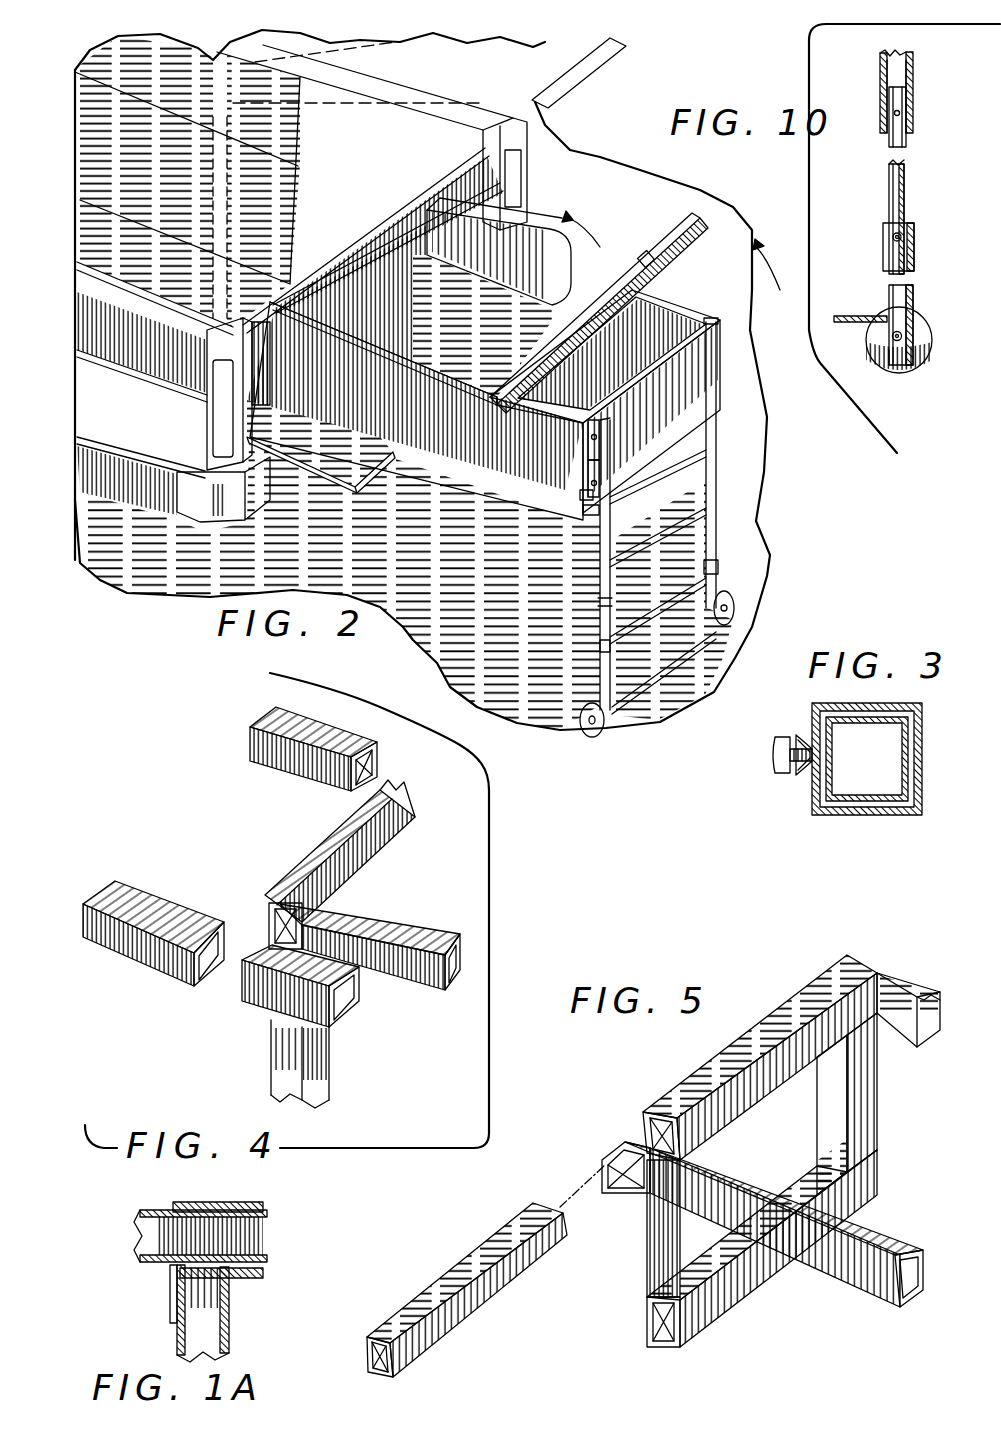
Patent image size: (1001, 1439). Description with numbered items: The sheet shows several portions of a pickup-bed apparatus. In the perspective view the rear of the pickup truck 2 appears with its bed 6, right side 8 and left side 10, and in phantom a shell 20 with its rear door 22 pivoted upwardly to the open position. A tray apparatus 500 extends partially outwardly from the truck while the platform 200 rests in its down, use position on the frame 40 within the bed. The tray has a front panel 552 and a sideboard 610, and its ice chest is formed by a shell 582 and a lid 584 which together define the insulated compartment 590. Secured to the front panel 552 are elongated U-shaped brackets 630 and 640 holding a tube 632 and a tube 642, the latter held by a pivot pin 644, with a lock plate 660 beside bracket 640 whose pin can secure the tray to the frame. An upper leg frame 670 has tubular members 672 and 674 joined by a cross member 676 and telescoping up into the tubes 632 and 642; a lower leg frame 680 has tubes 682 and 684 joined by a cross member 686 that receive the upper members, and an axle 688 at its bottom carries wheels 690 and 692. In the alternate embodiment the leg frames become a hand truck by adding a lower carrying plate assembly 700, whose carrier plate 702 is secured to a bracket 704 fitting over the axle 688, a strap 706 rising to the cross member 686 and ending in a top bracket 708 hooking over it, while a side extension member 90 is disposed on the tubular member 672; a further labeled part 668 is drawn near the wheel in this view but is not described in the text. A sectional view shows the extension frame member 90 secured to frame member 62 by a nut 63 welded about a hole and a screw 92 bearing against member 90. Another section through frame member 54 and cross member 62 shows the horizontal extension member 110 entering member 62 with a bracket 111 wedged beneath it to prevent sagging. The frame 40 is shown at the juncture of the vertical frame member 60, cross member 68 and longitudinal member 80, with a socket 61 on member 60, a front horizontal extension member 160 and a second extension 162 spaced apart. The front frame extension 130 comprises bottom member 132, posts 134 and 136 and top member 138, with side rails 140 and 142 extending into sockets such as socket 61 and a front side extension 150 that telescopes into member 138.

In FIG. 2, the pickup truck 2 is at (128, 505).
In FIG. 2, the platform 200 is at (403, 142).
In FIG. 2, the rear door 22 is at (567, 92).
In FIG. 2, the shell 20 is at (230, 149).
In FIG. 2, the right side 8 is at (530, 153).
In FIG. 2, the lid 584 is at (656, 252).
In FIG. 2, the shell 582 is at (605, 388).
In FIG. 2, the bracket 630 is at (690, 387).
In FIG. 2, the sideboard 610 is at (473, 462).
In FIG. 2, the insulated compartment 590 is at (567, 393).
In FIG. 2, the tray apparatus 500 is at (407, 465).
In FIG. 2, the left side 10 is at (176, 445).
In FIG. 2, the bed 6 is at (265, 455).
In FIG. 2, the pivot pin 644 is at (583, 437).
In FIG. 2, the tube 642 is at (600, 527).
In FIG. 2, the lock plate 660 is at (587, 493).
In FIG. 2, the bracket 640 is at (587, 490).
In FIG. 2, the upper leg frame 670 is at (673, 527).
In FIG. 2, the tubular member 674 is at (597, 553).
In FIG. 2, the tubular member 672 is at (727, 445).
In FIG. 10, the tubular member 672 is at (890, 133).
In FIG. 2, the tube 632 is at (720, 410).
In FIG. 2, the front panel 552 is at (600, 500).
In FIG. 2, the cross member 676 is at (620, 545).
In FIG. 2, the cross member 686 is at (627, 588).
In FIG. 10, the cross member 686 is at (870, 235).
In FIG. 2, the axle 688 is at (650, 647).
In FIG. 2, the tube 684 is at (596, 603).
In FIG. 2, the lower leg frame 680 is at (590, 646).
In FIG. 2, the tube 682 is at (713, 570).
In FIG. 10, the tube 682 is at (887, 257).
In FIG. 2, the wheel 692 is at (584, 705).
In FIG. 2, the wheel 690 is at (728, 603).
In FIG. 10, the wheel 690 is at (914, 322).
In FIG. 10, the extension frame member 90 is at (887, 102).
In FIG. 3, the extension frame member 90 is at (900, 763).
In FIG. 10, the top bracket 708 is at (890, 226).
In FIG. 10, the back plate or strap 706 is at (913, 254).
In FIG. 10, the lower carrying plate assembly 700 is at (891, 285).
In FIG. 10, the carrier plate 702 is at (858, 303).
In FIG. 10, the bracket 704 is at (883, 340).
In FIG. 10, the hub 668 is at (897, 367).
In FIG. 3, the frame member 62 is at (877, 707).
In FIG. 1A, the frame member 62 is at (263, 1210).
In FIG. 3, the screw 92 is at (773, 747).
In FIG. 3, the nut 63 is at (797, 780).
In FIG. 4, the second horizontal extension 162 is at (312, 765).
In FIG. 4, the front horizontal extension member 160 is at (180, 910).
In FIG. 4, the frame 40 is at (318, 840).
In FIG. 4, the cross member 68 is at (396, 855).
In FIG. 4, the frame member 80 is at (441, 937).
In FIG. 4, the tubing portion 61 is at (265, 994).
In FIG. 4, the vertical frame member 60 is at (329, 1072).
In FIG. 5, the side rail 140 is at (917, 993).
In FIG. 5, the top horizontal frame member 138 is at (757, 1037).
In FIG. 5, the front frame extension 130 is at (773, 1142).
In FIG. 5, the vertically extending post 134 is at (830, 1122).
In FIG. 5, the bottom horizontally extending frame member 132 is at (852, 1195).
In FIG. 5, the vertically extending post 136 is at (697, 1287).
In FIG. 5, the side rail 142 is at (860, 1283).
In FIG. 5, the front side extension 150 is at (490, 1287).
In FIG. 1A, the horizontal extension member 110 is at (147, 1210).
In FIG. 1A, the bracket 111 is at (170, 1295).
In FIG. 1A, the frame member 54 is at (229, 1307).